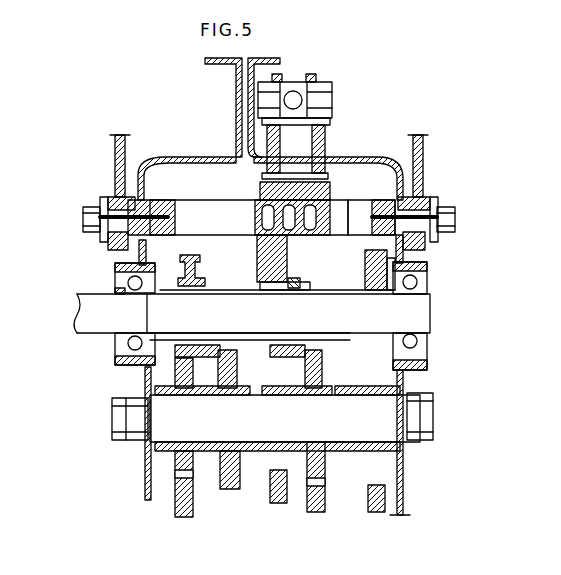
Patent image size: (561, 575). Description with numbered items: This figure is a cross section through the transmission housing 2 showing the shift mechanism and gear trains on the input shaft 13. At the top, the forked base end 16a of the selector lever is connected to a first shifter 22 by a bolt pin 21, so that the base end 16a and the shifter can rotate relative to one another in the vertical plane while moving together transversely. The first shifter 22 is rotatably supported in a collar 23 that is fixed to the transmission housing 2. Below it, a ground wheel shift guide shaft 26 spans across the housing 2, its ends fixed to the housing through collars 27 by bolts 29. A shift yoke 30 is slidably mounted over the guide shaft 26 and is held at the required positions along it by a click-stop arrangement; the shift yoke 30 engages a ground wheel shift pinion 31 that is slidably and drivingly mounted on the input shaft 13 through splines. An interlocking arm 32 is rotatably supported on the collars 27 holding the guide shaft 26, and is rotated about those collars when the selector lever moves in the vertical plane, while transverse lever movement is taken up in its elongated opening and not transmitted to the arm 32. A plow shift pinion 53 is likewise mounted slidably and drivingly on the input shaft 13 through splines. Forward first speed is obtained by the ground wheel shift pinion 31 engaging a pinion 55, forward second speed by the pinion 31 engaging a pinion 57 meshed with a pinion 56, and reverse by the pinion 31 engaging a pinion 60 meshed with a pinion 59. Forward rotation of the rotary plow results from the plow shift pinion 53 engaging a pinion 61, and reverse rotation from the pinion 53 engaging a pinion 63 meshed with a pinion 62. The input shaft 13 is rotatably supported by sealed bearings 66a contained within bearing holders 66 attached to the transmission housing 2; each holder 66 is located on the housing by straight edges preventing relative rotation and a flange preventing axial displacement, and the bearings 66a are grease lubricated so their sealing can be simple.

The transmission housing 2 is at (180, 165).
The input shaft 13 is at (410, 312).
The forked base end 16a is at (318, 75).
The bolt pin 21 is at (315, 100).
The first shifter 22 is at (300, 148).
The collar 23 is at (335, 165).
The ground wheel shift guide shaft 26 is at (356, 208).
The collars 27 is at (112, 200).
The bolts 29 is at (86, 215).
The shift yoke 30 is at (262, 195).
The ground wheel shift pinion 31 is at (392, 262).
The interlocking arm 32 is at (118, 150).
The plow shift pinion 53 is at (203, 268).
The pinion 55 is at (276, 503).
The pinion 56 is at (385, 500).
The pinion 57 is at (404, 378).
The pinion 59 is at (325, 500).
The pinion 60 is at (340, 470).
The pinion 61 is at (240, 364).
The pinion 62 is at (144, 374).
The pinion 63 is at (178, 500).
The bearing holders 66 is at (118, 270).
The sealed bearings 66a is at (126, 342).